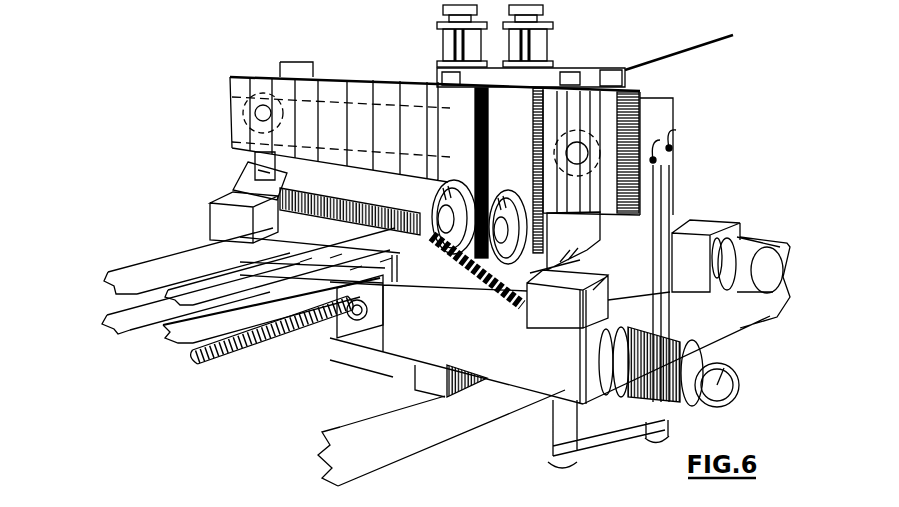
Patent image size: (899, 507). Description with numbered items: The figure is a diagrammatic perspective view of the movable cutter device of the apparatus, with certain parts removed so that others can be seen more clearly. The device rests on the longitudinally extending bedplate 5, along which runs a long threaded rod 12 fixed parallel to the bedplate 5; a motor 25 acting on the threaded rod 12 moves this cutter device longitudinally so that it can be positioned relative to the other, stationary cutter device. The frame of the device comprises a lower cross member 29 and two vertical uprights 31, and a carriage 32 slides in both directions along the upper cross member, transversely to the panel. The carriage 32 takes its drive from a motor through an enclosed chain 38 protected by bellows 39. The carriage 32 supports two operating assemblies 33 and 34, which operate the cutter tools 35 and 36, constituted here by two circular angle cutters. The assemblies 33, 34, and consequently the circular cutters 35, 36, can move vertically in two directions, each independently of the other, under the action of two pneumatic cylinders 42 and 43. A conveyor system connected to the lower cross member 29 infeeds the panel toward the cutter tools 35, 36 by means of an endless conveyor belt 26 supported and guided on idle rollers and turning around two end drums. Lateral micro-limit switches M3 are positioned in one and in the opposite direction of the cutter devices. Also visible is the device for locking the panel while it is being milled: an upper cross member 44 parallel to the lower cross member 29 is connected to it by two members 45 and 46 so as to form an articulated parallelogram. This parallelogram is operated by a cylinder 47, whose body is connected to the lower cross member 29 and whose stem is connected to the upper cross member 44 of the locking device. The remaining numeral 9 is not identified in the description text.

The bedplate 5 is at (345, 428).
The frame 9 is at (162, 0).
The threaded rod 12 is at (222, 362).
The motor 25 is at (693, 358).
The endless conveyor belt 26 is at (153, 267).
The lower cross member 29 is at (437, 330).
The vertical uprights 31 is at (650, 190).
The carriage 32 is at (552, 63).
The operating assembly 33 is at (460, 137).
The operating assembly 34 is at (625, 80).
The cutter tool 35 is at (390, 168).
The cutter tool 36 is at (638, 213).
The enclosed chain 38 is at (247, 100).
The bellows 39 is at (247, 87).
The pneumatic cylinder 42 is at (520, 48).
The pneumatic cylinder 43 is at (440, 37).
The upper cross member 44 is at (253, 167).
The member 45 is at (233, 190).
The member 46 is at (207, 247).
The cylinder 47 is at (470, 293).
The lateral micro-limit switch M3 is at (111, 8).